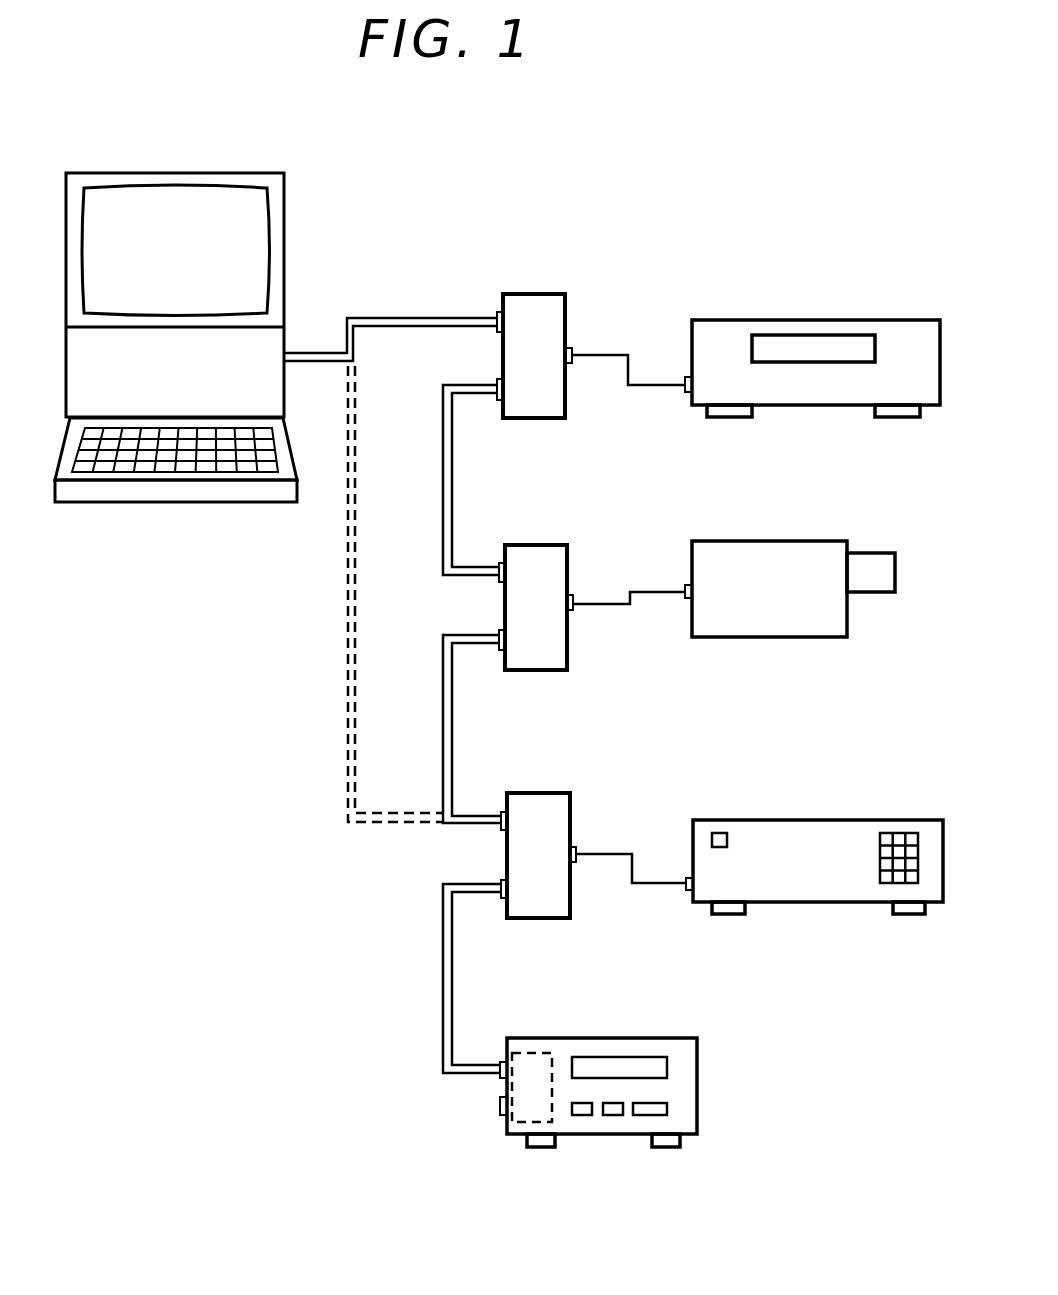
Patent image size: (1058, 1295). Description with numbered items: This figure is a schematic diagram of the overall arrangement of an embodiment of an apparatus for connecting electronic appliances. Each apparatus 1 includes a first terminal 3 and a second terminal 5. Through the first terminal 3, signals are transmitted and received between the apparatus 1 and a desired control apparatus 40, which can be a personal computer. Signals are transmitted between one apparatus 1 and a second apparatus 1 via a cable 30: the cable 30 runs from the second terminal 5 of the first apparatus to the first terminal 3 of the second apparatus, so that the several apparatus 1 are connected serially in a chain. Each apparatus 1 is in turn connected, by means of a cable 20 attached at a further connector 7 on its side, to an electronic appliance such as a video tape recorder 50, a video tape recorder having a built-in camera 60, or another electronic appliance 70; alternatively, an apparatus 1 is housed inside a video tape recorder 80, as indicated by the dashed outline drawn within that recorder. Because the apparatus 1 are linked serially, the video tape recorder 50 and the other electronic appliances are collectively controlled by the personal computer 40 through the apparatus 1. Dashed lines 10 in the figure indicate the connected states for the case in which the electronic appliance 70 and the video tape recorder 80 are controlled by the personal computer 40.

The apparatus 1 is at (537, 294).
The first terminal 3 is at (497, 310).
The second terminal 5 is at (497, 380).
The device connector 7 is at (573, 350).
The dashed lines 10 is at (392, 316).
The cable 20 is at (628, 353).
The cable 30 is at (443, 468).
The control apparatus 40 is at (284, 206).
The video tape recorder 50 is at (900, 320).
The video tape recorder having a built-in camera 60 is at (805, 541).
The electronic appliance 70 is at (905, 820).
The video tape recorder 80 is at (672, 1038).